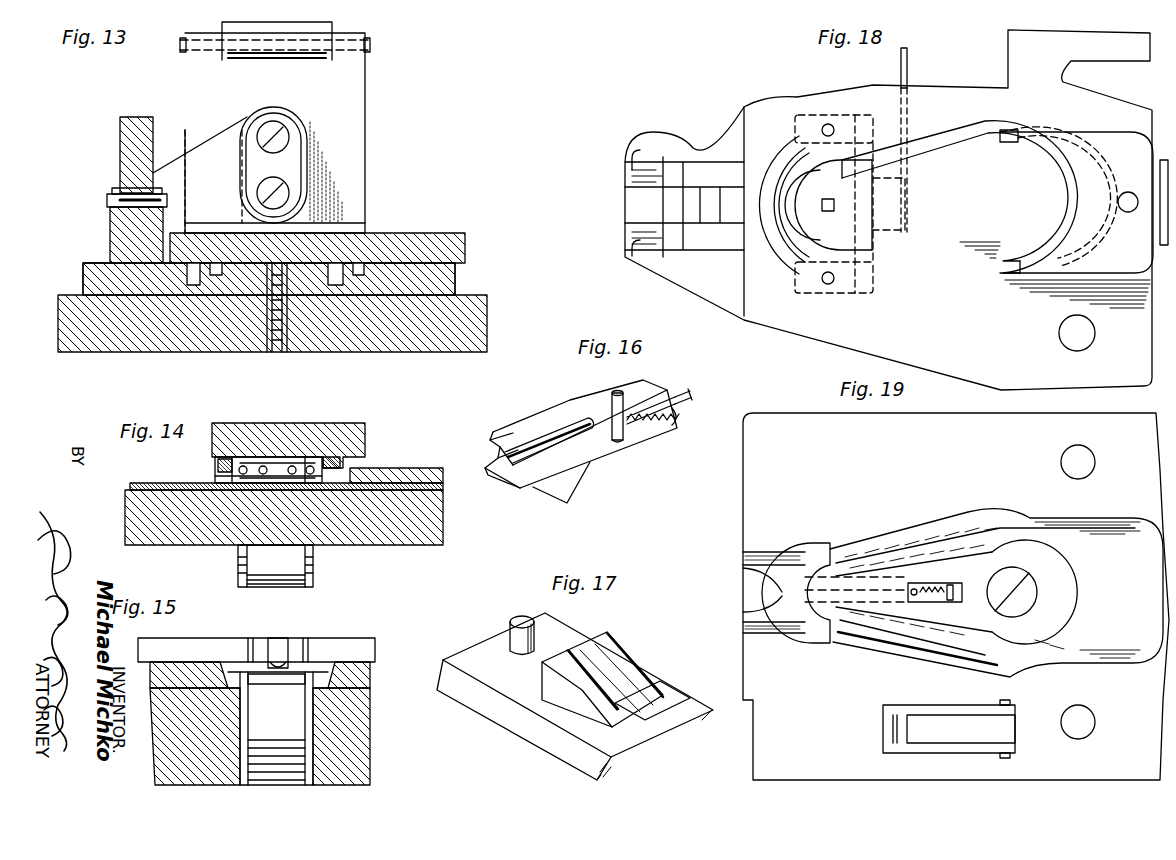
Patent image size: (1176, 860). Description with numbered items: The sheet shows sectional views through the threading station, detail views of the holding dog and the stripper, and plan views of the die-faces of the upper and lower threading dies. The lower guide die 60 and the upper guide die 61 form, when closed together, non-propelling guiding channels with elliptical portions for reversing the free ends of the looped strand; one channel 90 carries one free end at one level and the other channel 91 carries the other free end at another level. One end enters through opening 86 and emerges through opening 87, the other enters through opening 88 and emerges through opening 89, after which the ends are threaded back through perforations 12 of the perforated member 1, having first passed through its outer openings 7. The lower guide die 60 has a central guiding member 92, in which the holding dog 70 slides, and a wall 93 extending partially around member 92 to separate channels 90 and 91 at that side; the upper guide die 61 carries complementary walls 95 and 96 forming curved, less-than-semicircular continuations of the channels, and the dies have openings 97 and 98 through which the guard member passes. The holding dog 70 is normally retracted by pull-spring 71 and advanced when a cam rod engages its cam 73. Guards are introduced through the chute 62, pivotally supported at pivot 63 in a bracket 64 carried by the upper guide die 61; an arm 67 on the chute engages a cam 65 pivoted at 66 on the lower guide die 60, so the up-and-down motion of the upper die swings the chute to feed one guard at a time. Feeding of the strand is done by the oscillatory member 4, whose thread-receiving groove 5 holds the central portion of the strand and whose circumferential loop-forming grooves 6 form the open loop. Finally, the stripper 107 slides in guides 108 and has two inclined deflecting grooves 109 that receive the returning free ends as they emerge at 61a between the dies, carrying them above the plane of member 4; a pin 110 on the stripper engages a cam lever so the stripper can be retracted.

In FIG. 14, the perforated member 1 is at (238, 490).
In FIG. 14, the circular and oscillatory member 4 is at (305, 578).
In FIG. 15, the circular and oscillatory member 4 is at (276, 748).
In FIG. 15, the thread-receiving groove 5 is at (273, 682).
In FIG. 14, the circumferential loop-forming grooves 6 is at (238, 562).
In FIG. 15, the circumferential loop-forming grooves 6 is at (313, 717).
In FIG. 14, the outer openings 7 is at (218, 468).
In FIG. 14, the perforations 12 is at (276, 470).
In FIG. 13, the lower guide die 60 is at (445, 283).
In FIG. 19, the lower guide die 60 is at (956, 596).
In FIG. 13, the upper guide die 61 is at (442, 236).
In FIG. 14, the upper guide die 61 is at (350, 423).
In FIG. 18, the upper guide die 61 is at (896, 210).
In FIG. 14, the space between the upper and lower guide dies 61a is at (268, 470).
In FIG. 18, the space between the upper and lower guide dies 61a is at (633, 205).
In FIG. 13, the chute 62 is at (320, 28).
In FIG. 13, the pivot 63 is at (370, 45).
In FIG. 13, the bracket 64 is at (345, 90).
In FIG. 18, the bracket 64 is at (870, 282).
In FIG. 13, the cam 65 is at (120, 148).
In FIG. 19, the cam 65 is at (907, 728).
In FIG. 13, the pivot 66 is at (107, 202).
In FIG. 19, the pivot 66 is at (1005, 703).
In FIG. 13, the arm 67 is at (215, 142).
In FIG. 18, the arm 67 is at (907, 58).
In FIG. 16, the holding dog 70 is at (648, 433).
In FIG. 19, the holding dog 70 is at (925, 600).
In FIG. 16, the pull-spring 71 is at (680, 398).
In FIG. 16, the cam 73 is at (578, 494).
In FIG. 19, the opening 86 is at (750, 630).
In FIG. 19, the opening 87 is at (755, 572).
In FIG. 19, the opening 88 is at (750, 553).
In FIG. 19, the opening 89 is at (755, 610).
In FIG. 13, the channel 90 is at (192, 265).
In FIG. 19, the channel 90 is at (953, 547).
In FIG. 13, the channel 91 is at (216, 265).
In FIG. 19, the channel 91 is at (923, 527).
In FIG. 19, the central guiding member 92 is at (1023, 592).
In FIG. 19, the wall 93 is at (957, 653).
In FIG. 18, the complementary wall 95 is at (1036, 257).
In FIG. 18, the complementary wall 96 is at (1073, 260).
In FIG. 19, the opening 97 is at (808, 548).
In FIG. 18, the opening 98 is at (795, 240).
In FIG. 15, the stripper 107 is at (305, 640).
In FIG. 17, the stripper 107 is at (487, 710).
In FIG. 15, the guides 108 is at (217, 660).
In FIG. 15, the inclined deflecting grooves 109 is at (293, 637).
In FIG. 17, the inclined deflecting grooves 109 is at (573, 683).
In FIG. 17, the pin 110 is at (519, 616).